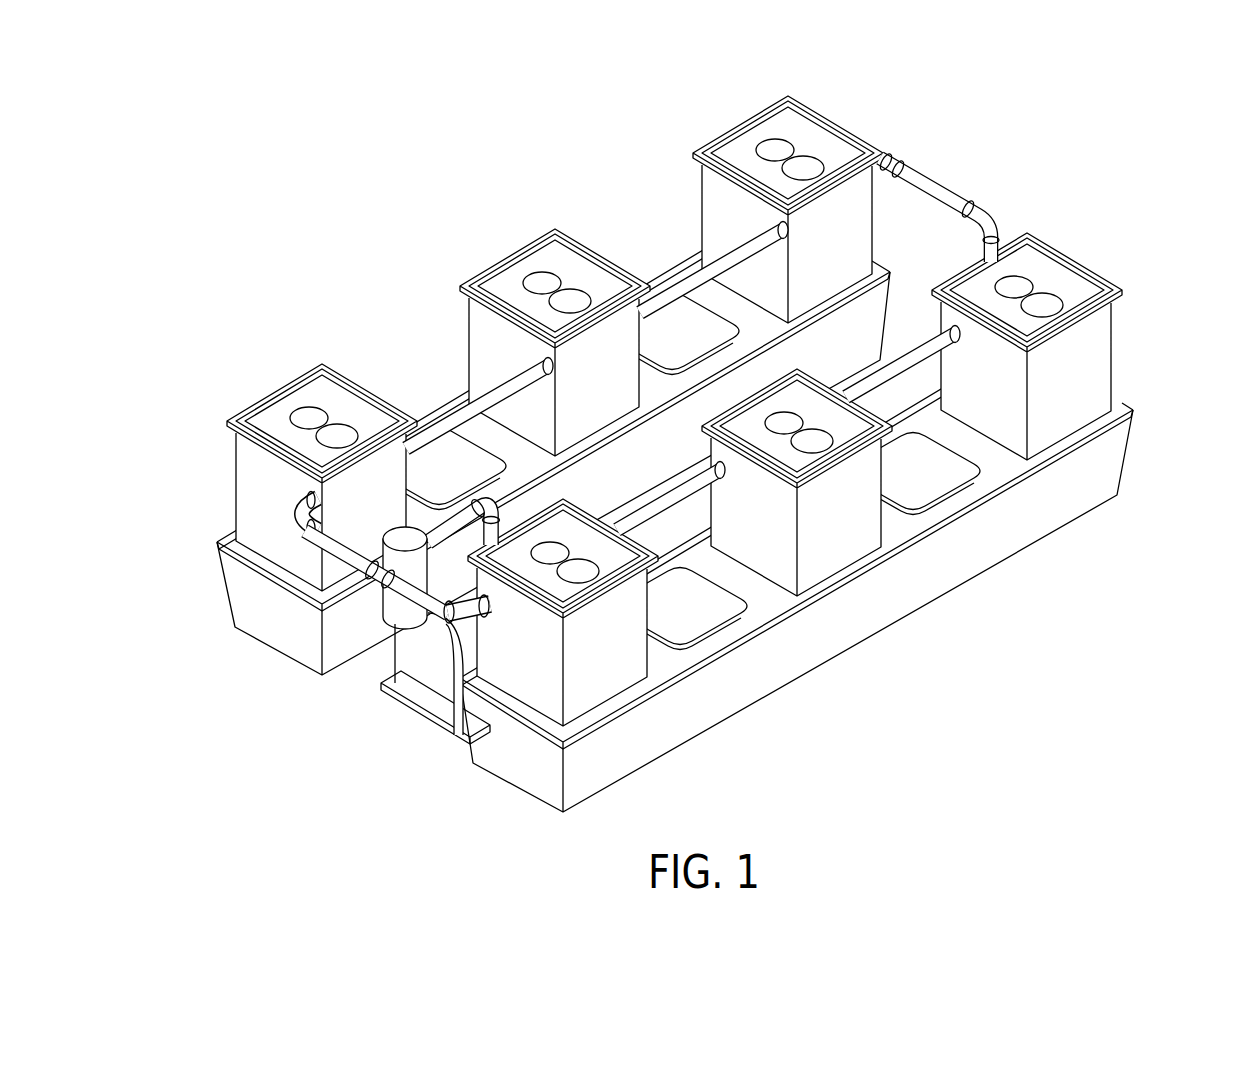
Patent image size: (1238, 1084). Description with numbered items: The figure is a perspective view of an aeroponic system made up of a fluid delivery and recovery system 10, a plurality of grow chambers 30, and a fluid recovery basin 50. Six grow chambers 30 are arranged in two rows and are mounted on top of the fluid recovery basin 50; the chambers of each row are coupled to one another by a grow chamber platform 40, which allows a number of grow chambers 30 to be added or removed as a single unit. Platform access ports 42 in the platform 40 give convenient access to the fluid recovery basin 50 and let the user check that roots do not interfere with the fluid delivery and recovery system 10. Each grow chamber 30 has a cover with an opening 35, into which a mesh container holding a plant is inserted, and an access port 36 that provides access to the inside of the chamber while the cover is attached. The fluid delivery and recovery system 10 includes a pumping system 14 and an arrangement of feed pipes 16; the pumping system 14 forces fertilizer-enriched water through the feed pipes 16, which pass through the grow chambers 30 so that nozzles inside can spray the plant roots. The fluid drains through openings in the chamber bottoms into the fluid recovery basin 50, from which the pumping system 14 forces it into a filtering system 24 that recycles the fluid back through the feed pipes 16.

The fluid delivery and recovery system 10 is at (672, 461).
The pumping system 14 is at (393, 674).
The feed pipes 16 is at (283, 520).
The filtering system 24 is at (397, 607).
The grow chambers 30 is at (718, 212).
The opening 35 is at (1045, 302).
The access ports 36 is at (1008, 282).
The grow chamber platform 40 is at (1000, 460).
The platform access ports 42 is at (918, 494).
The fluid recovery basin 50 is at (243, 590).